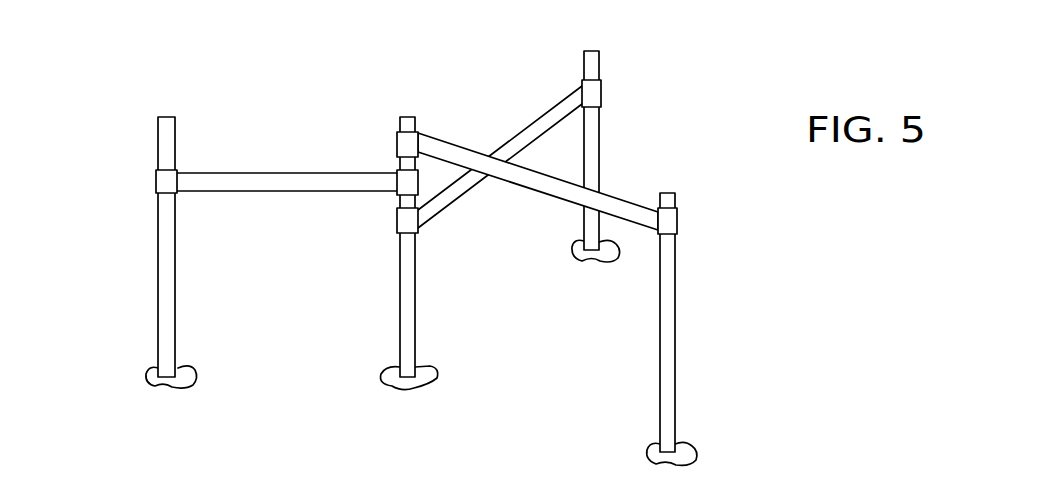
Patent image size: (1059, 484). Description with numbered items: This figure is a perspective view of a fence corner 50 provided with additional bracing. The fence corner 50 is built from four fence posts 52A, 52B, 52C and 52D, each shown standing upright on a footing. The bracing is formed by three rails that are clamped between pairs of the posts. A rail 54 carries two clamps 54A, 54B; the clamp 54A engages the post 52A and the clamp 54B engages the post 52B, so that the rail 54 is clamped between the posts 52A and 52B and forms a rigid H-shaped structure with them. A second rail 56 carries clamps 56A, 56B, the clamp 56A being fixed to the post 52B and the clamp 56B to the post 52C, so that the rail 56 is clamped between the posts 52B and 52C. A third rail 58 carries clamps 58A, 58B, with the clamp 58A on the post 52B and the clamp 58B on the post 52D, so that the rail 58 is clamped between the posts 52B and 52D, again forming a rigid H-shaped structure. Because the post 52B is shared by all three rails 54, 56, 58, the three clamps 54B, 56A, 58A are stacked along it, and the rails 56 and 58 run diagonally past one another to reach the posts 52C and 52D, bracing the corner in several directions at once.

The fence corner 50 is at (146, 79).
The fence post 52A is at (158, 320).
The fence post 52B is at (398, 328).
The fence post 52C is at (675, 398).
The fence post 52D is at (602, 153).
The rail 54 is at (268, 173).
The clamp 54A is at (157, 182).
The clamp 54B is at (404, 188).
The rail 56 is at (632, 200).
The clamp 56A is at (397, 140).
The clamp 56B is at (678, 222).
The rail 58 is at (530, 125).
The clamp 58A is at (420, 222).
The clamp 58B is at (600, 57).